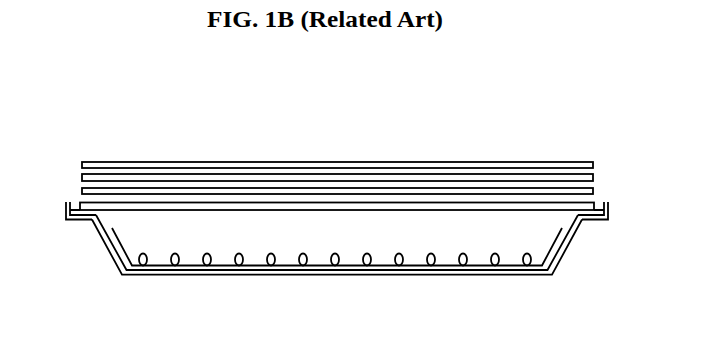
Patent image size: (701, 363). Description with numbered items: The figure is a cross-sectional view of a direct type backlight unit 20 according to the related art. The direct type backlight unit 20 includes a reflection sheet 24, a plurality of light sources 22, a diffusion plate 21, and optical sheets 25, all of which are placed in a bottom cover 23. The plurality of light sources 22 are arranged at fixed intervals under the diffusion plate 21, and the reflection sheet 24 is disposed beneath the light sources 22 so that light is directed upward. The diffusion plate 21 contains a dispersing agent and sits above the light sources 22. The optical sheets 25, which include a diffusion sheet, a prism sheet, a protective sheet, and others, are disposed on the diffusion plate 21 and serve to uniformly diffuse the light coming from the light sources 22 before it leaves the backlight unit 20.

The direct type backlight unit 20 is at (188, 102).
The diffusion plate 21 is at (92, 211).
The light sources 22 is at (270, 264).
The bottom cover 23 is at (123, 276).
The reflection sheet 24 is at (188, 266).
The optical sheets 25 is at (77, 163).